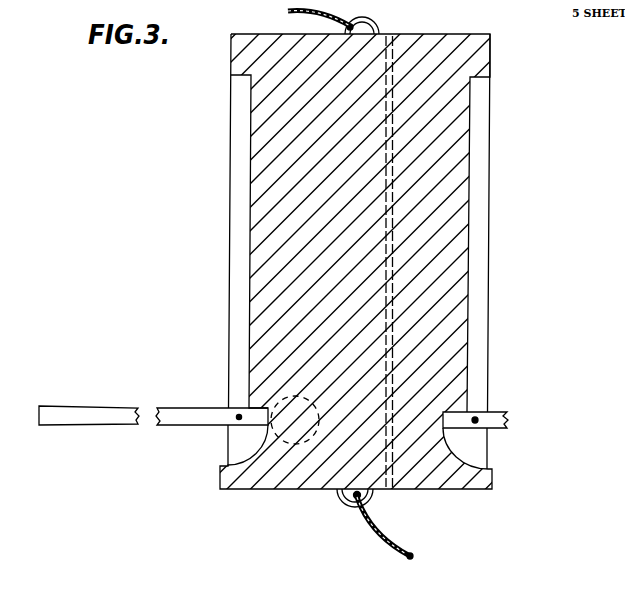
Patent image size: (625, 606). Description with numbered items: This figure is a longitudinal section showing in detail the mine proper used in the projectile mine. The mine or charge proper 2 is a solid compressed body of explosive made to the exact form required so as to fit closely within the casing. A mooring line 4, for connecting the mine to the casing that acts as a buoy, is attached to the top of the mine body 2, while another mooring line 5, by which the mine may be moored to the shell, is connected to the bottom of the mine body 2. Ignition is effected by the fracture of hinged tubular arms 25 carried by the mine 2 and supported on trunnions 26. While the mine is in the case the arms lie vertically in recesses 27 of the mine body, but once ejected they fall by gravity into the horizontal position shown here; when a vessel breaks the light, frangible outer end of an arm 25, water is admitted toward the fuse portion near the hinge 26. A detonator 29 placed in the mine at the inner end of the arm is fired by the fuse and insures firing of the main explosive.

The mine body 2 is at (450, 60).
The mooring line 4 is at (288, 12).
The mooring line 5 is at (395, 543).
The hinged tubular arm 25 is at (168, 410).
The trunnion 26 is at (239, 418).
The recess 27 is at (238, 110).
The detonator 29 is at (268, 430).